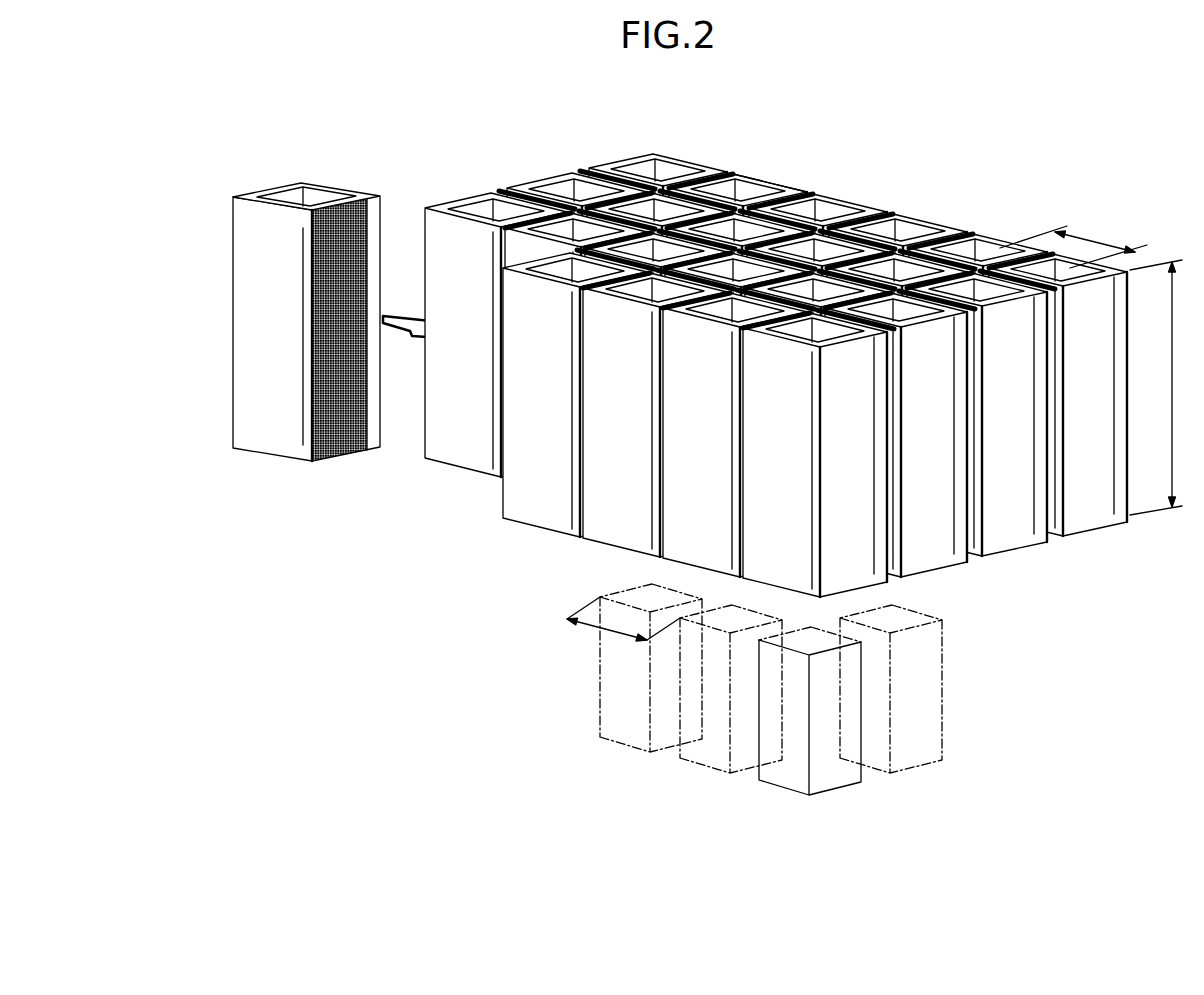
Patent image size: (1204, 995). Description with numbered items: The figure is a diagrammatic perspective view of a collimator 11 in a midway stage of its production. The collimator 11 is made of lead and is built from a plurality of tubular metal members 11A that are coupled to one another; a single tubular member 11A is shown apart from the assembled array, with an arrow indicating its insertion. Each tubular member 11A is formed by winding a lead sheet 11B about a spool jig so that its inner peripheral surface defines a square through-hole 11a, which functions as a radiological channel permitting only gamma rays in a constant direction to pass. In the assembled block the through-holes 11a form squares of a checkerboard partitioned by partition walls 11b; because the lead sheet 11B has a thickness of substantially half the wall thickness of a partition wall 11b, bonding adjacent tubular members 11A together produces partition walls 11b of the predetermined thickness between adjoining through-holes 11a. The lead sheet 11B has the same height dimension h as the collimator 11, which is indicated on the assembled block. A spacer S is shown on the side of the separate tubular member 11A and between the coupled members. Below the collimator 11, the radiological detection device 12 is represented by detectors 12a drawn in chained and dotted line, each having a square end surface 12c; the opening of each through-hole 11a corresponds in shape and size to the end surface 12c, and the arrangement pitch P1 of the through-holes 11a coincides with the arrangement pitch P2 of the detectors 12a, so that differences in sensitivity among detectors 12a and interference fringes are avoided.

The collimator 11 is at (982, 157).
The tubular metal member 11A is at (534, 341).
The through-hole 11a is at (315, 196).
The lead sheet 11B is at (248, 308).
The partition wall 11b is at (758, 184).
The radiological detection device 12 is at (862, 688).
The detector 12a is at (841, 712).
The end surface 12c is at (998, 644).
The spacer sheet S is at (362, 192).
The arrangement pitch of through-holes P1 is at (1073, 241).
The arrangement pitch of detectors P2 is at (622, 627).
The height dimension h is at (1161, 387).